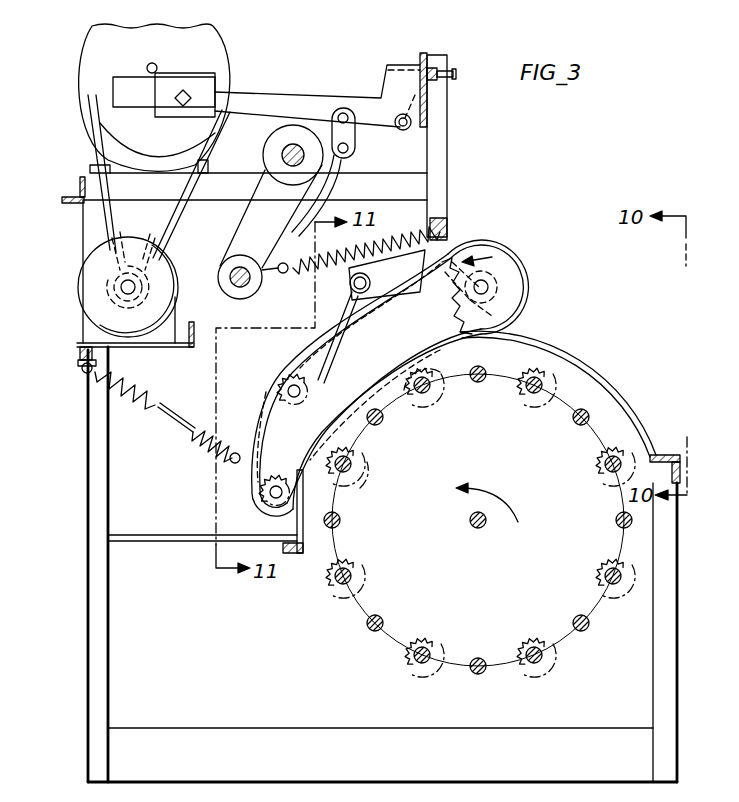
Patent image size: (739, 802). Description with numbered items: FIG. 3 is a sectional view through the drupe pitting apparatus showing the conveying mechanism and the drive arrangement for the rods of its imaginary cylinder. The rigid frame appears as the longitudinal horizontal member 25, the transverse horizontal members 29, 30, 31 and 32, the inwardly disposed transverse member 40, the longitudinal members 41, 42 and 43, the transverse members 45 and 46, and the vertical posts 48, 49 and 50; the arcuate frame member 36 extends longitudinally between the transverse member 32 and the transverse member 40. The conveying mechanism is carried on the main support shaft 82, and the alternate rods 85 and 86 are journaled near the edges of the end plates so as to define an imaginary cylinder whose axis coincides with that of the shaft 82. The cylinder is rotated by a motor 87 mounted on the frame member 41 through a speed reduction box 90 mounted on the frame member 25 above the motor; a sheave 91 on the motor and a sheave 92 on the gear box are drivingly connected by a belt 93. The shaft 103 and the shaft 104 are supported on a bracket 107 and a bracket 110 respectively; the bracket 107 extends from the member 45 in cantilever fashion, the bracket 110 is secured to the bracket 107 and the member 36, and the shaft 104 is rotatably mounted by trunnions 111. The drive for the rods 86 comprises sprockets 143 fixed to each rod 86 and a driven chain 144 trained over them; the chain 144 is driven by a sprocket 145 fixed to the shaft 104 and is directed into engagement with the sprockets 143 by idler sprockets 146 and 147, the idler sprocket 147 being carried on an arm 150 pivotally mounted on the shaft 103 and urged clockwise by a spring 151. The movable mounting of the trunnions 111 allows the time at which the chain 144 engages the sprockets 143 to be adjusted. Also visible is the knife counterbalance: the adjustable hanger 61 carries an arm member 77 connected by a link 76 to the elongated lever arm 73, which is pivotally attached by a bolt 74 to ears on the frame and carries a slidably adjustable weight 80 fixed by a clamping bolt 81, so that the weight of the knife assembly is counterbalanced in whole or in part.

The longitudinally extending horizontal frame member 25 is at (380, 185).
The transversely extending horizontal frame member 29 is at (65, 197).
The transversely extending horizontal frame member 30 is at (80, 353).
The transversely extending horizontal frame member 31 is at (440, 54).
The transverse frame member 32 is at (665, 455).
The arcuate frame member 36 is at (620, 400).
The transverse frame member 40 is at (297, 553).
The longitudinal frame member 41 is at (130, 343).
The longitudinal frame member 42 is at (143, 541).
The longitudinal frame member 43 is at (640, 716).
The transverse frame member 45 is at (440, 222).
The transverse frame member 46 is at (195, 337).
The vertically extending post member 48 is at (92, 608).
The vertically extending post member 49 is at (447, 128).
The vertically extending post member 50 is at (670, 598).
The adjustable hanger 61 is at (250, 212).
The lever arm 73 is at (283, 96).
The bolt 74 is at (402, 131).
The link 76 is at (352, 138).
The arm member 77 is at (336, 160).
The adjustable weight 80 is at (178, 78).
The clamping bolt 81 is at (190, 96).
The main support shaft 82 is at (470, 522).
The rods 85 is at (476, 383).
The rods 86 is at (440, 375).
The motor 87 is at (84, 283).
The speed reduction box 90 is at (100, 128).
The sheave 91 is at (115, 270).
The sheave 92 is at (137, 125).
The belt 93 is at (165, 232).
The shaft 103 is at (350, 283).
The shaft 104 is at (488, 286).
The bracket 107 is at (398, 262).
The bracket 110 is at (492, 338).
The trunnions 111 is at (470, 296).
The sprockets 143 is at (428, 402).
The driven chain 144 is at (270, 398).
The sprocket 145 is at (495, 253).
The idler sprocket 146 is at (262, 498).
The idler sprocket 147 is at (308, 396).
The arm 150 is at (252, 452).
The spring 151 is at (150, 398).